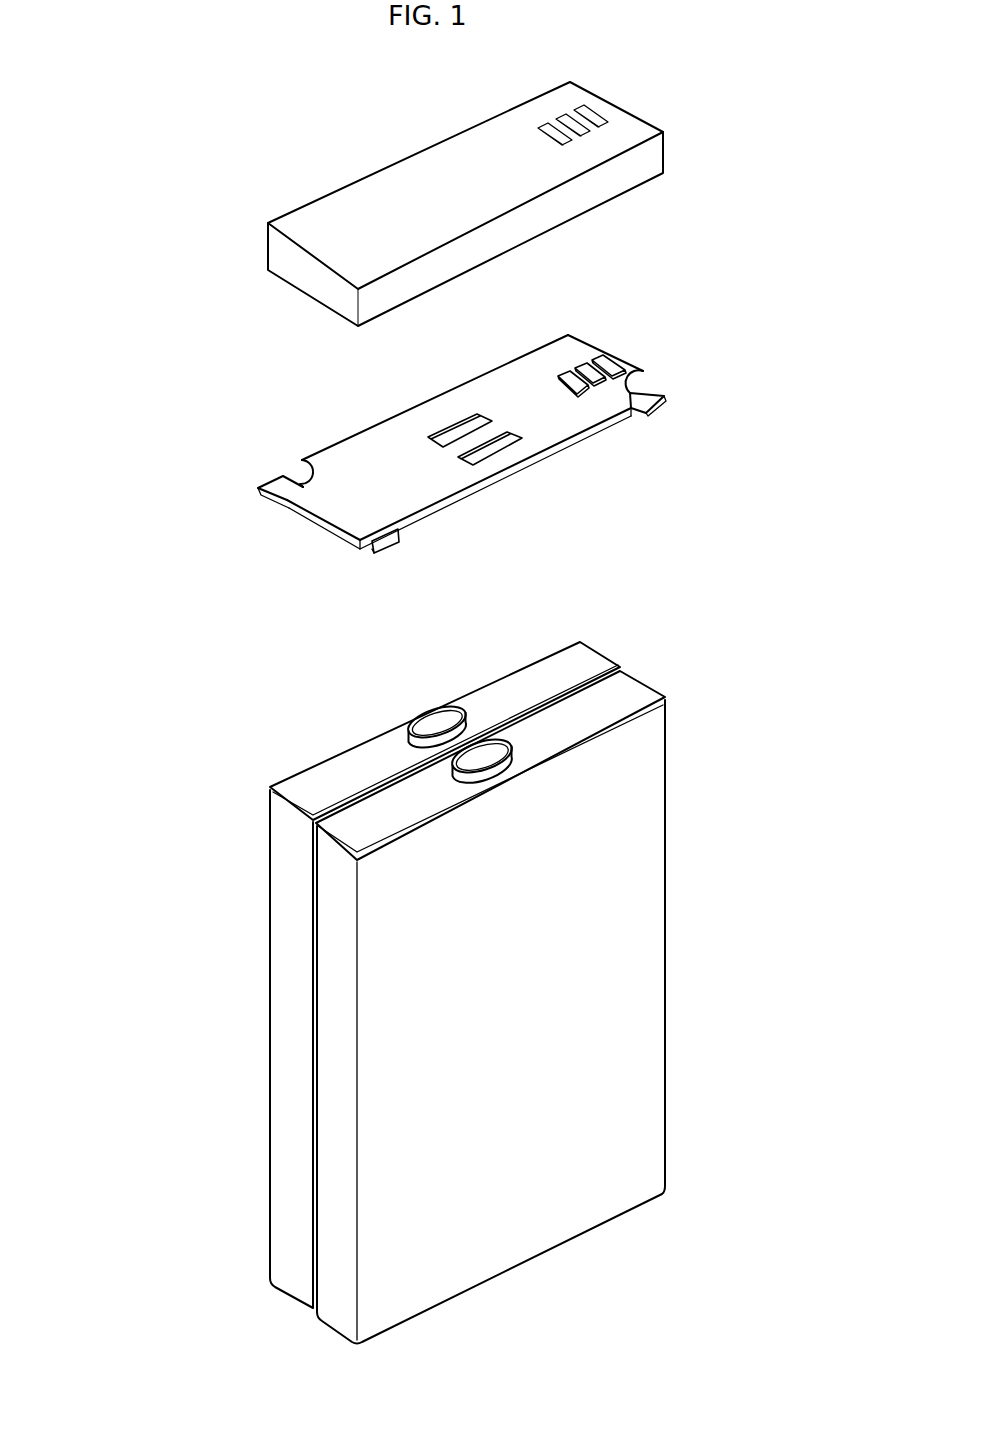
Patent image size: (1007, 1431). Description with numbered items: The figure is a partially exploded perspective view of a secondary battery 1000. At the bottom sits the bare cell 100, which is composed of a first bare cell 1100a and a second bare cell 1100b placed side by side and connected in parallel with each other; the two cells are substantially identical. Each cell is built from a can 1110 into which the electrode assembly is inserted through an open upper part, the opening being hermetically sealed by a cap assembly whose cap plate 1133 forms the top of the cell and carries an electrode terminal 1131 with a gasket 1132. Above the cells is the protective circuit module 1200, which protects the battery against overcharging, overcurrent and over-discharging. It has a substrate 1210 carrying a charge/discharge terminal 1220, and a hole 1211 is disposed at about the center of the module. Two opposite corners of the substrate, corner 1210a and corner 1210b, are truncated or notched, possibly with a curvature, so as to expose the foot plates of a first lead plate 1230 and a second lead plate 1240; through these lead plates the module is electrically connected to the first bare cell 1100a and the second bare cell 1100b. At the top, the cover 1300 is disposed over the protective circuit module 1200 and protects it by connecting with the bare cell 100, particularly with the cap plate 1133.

The secondary battery 1000 is at (185, 88).
The cover 1300 is at (403, 148).
The protective circuit module 1200 is at (236, 436).
The substrate 1210 is at (545, 358).
The hole 1211 is at (462, 425).
The charge/discharge terminal 1220 is at (605, 350).
The corner of the substrate 1210a is at (648, 377).
The corner of the substrate 1210b is at (298, 467).
The first lead plate 1230 is at (662, 403).
The second lead plate 1240 is at (385, 553).
The bare cell 100 is at (132, 1065).
The first bare cell 1100a is at (258, 1063).
The second bare cell 1100b is at (330, 1167).
The can 1110 is at (303, 937).
The electrode terminal 1131 is at (427, 720).
The gasket 1132 is at (446, 707).
The cap plate 1133 is at (365, 760).